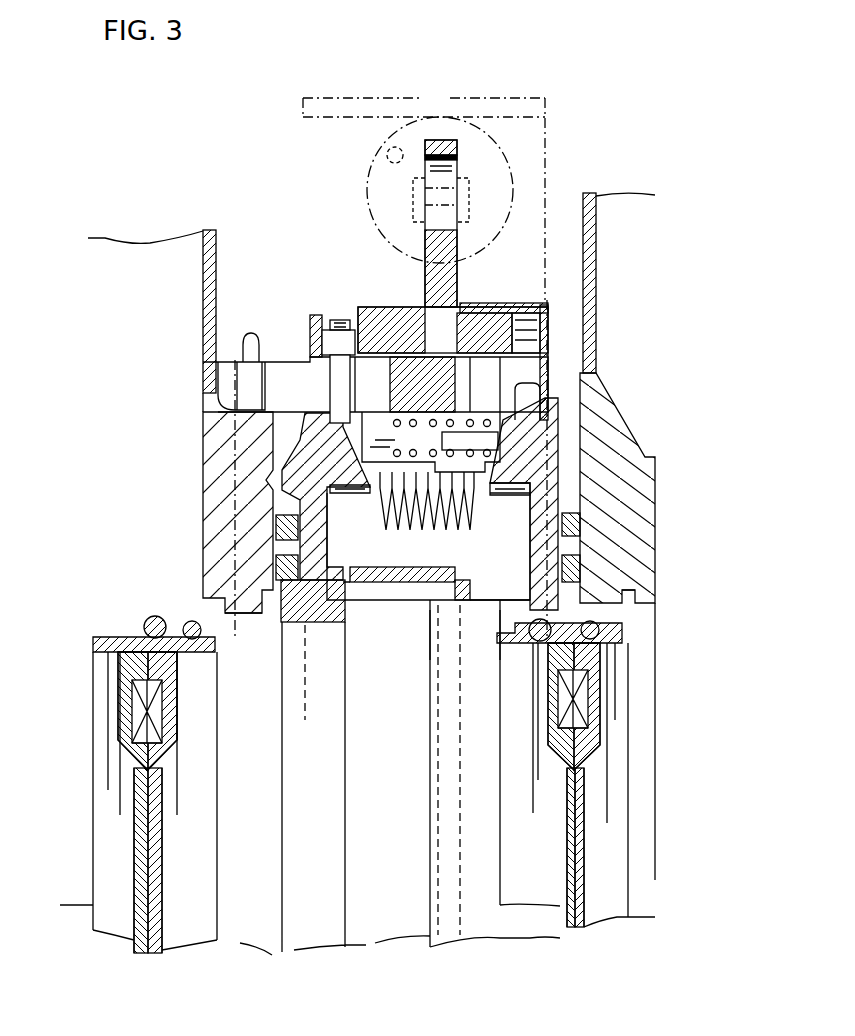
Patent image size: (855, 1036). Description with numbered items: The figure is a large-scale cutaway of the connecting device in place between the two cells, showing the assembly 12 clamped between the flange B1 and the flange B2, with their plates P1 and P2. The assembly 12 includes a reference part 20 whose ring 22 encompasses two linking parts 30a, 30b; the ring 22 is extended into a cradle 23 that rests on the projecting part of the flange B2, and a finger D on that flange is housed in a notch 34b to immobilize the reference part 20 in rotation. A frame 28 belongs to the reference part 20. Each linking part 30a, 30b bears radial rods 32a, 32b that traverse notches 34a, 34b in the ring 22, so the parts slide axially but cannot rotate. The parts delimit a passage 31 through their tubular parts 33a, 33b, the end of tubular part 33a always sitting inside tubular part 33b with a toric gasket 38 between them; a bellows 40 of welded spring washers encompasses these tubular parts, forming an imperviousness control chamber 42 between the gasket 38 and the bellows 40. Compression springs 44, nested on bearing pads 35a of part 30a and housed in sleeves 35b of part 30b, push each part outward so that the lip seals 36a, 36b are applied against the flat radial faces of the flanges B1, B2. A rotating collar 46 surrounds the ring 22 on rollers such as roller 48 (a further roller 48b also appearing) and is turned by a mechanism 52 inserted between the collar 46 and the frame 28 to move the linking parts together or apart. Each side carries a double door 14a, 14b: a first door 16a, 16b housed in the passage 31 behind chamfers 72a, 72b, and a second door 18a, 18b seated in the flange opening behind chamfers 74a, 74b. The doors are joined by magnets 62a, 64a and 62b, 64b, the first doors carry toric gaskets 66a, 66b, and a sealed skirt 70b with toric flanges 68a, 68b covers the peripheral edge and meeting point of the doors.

The assembly 12 is at (352, 84).
The frame 28 is at (512, 96).
The reference part 20 is at (304, 162).
The mechanism 52 is at (370, 248).
The ring 22 is at (462, 305).
The rotating collar 46 is at (452, 310).
The roller 48 is at (545, 323).
The fastening screw 48b is at (348, 326).
The radial rod 32b is at (328, 380).
The radial rod 32a is at (550, 392).
The notch 34b is at (218, 396).
The notch 34a is at (545, 400).
The compression springs 44 is at (487, 392).
The finger D is at (262, 385).
The plate P2 is at (203, 281).
The plate P1 is at (598, 277).
The cradle 23 is at (203, 380).
The flange B2 is at (203, 433).
The flange B1 is at (625, 452).
The linking part 30b is at (298, 480).
The linking part 30a is at (548, 485).
The lip seals 36b is at (276, 546).
The lip seals 36a is at (582, 546).
The sleeve 35b is at (345, 494).
The bearing pad 35a is at (490, 496).
The imperviousness control chamber 42 is at (427, 520).
The toric gasket 38 is at (428, 583).
The imperviousness bellows 40 is at (388, 592).
The passage 31 is at (430, 662).
The tubular part 33b is at (428, 612).
The tubular part 33a is at (500, 612).
The chamfer 72b is at (285, 632).
The chamfer 72a is at (500, 646).
The chamfer 74b is at (228, 614).
The chamfer 74a is at (640, 598).
The sealed skirt 70b is at (110, 636).
The toric gasket 66b is at (155, 616).
The toric gasket 66a is at (555, 620).
The toric flange 68b is at (192, 620).
The toric flange 68a is at (600, 628).
The magnet 62b is at (162, 712).
The magnet 62a is at (590, 690).
The magnet 64b is at (158, 742).
The magnet 64a is at (586, 728).
The first door 16b is at (188, 960).
The first door 16a is at (556, 935).
The second door 18b is at (112, 940).
The second door 18a is at (610, 930).
The double door 14b is at (88, 876).
The double door 14a is at (638, 850).